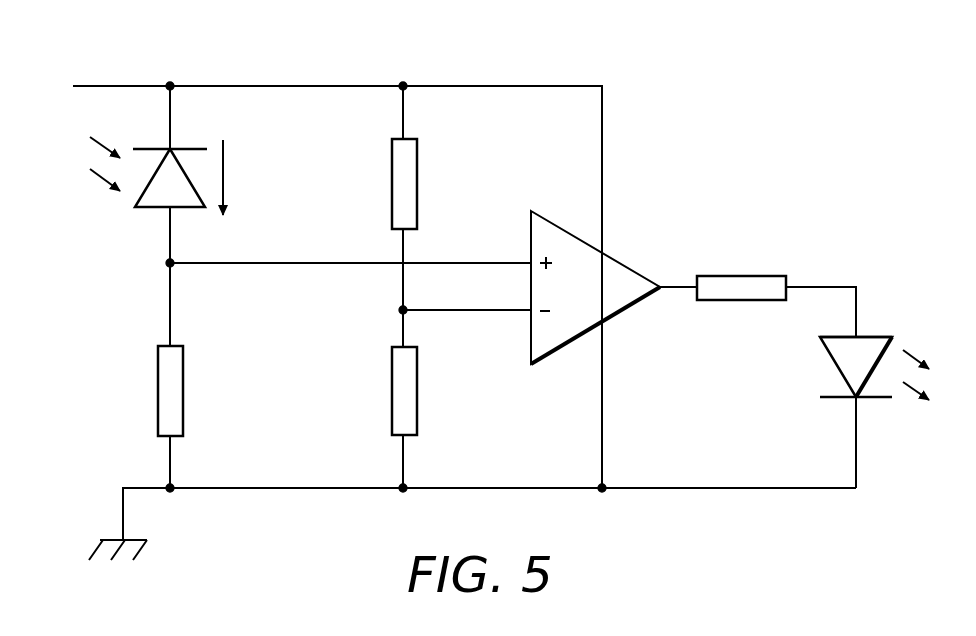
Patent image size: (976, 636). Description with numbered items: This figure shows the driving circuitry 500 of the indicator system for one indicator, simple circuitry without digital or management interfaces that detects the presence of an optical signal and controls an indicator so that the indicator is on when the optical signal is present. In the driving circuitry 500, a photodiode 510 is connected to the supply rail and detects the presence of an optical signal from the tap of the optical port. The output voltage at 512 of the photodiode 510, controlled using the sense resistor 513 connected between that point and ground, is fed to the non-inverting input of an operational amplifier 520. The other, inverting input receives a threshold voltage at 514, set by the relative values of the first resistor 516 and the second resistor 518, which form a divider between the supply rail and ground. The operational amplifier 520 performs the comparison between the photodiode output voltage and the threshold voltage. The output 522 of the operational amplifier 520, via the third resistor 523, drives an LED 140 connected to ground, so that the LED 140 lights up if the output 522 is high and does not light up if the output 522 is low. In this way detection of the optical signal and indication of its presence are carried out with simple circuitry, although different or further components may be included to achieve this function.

The driving circuitry 500 is at (722, 78).
The photodiode 510 is at (138, 197).
The output voltage of the photodiode 512 is at (170, 263).
The resistor Rs 513 is at (158, 358).
The threshold voltage 514 is at (497, 313).
The resistor R1 516 is at (392, 152).
The resistor R2 518 is at (392, 360).
The operational amplifier 520 is at (635, 305).
The output of the operational amplifier 522 is at (680, 283).
The resistor R3 523 is at (740, 300).
The LED 140 is at (883, 335).